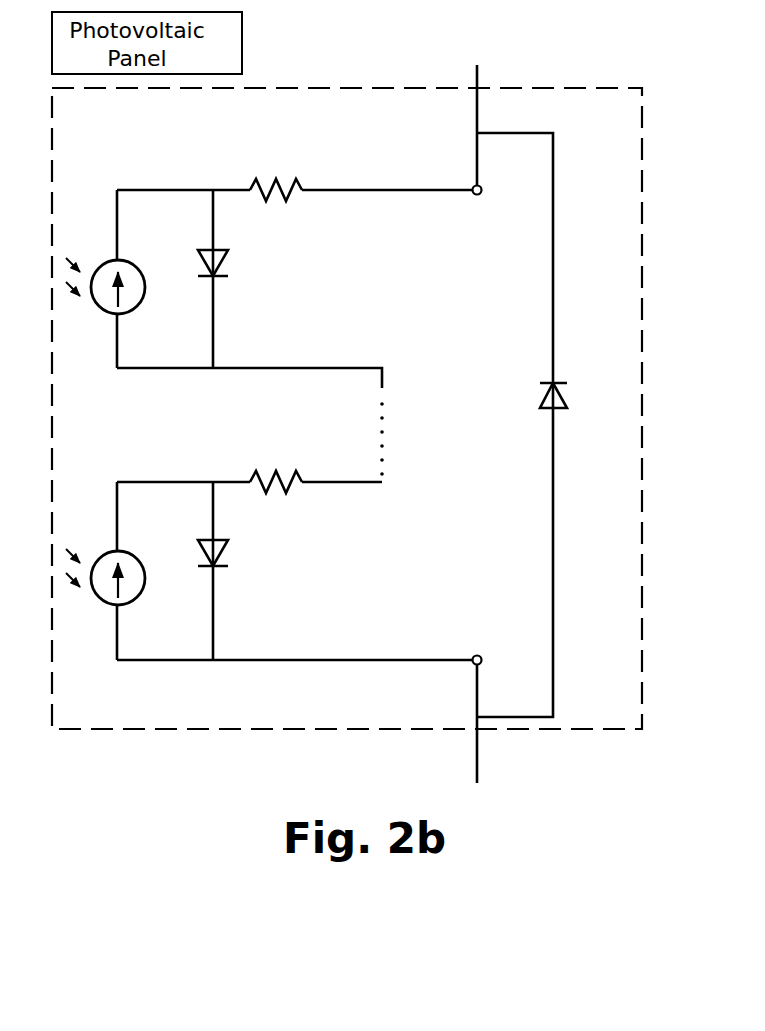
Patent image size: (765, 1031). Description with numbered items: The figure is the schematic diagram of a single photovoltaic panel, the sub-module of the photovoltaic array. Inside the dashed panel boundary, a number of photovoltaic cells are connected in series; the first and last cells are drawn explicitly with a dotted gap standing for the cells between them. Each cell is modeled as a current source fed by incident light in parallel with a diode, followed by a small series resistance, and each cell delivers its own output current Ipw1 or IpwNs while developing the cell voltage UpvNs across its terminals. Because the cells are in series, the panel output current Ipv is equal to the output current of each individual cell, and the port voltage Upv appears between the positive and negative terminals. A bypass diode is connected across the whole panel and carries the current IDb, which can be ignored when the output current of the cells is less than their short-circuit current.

The output current of photovoltaic cell IpwNs is at (359, 176).
The photovoltaic cell voltage UpvNs is at (366, 200).
The output current of photovoltaic cell Ipw1 is at (366, 468).
The PVA output current Ipv is at (459, 178).
The port voltage Upv is at (459, 392).
The current flowing through the bypass diode IDb is at (587, 381).